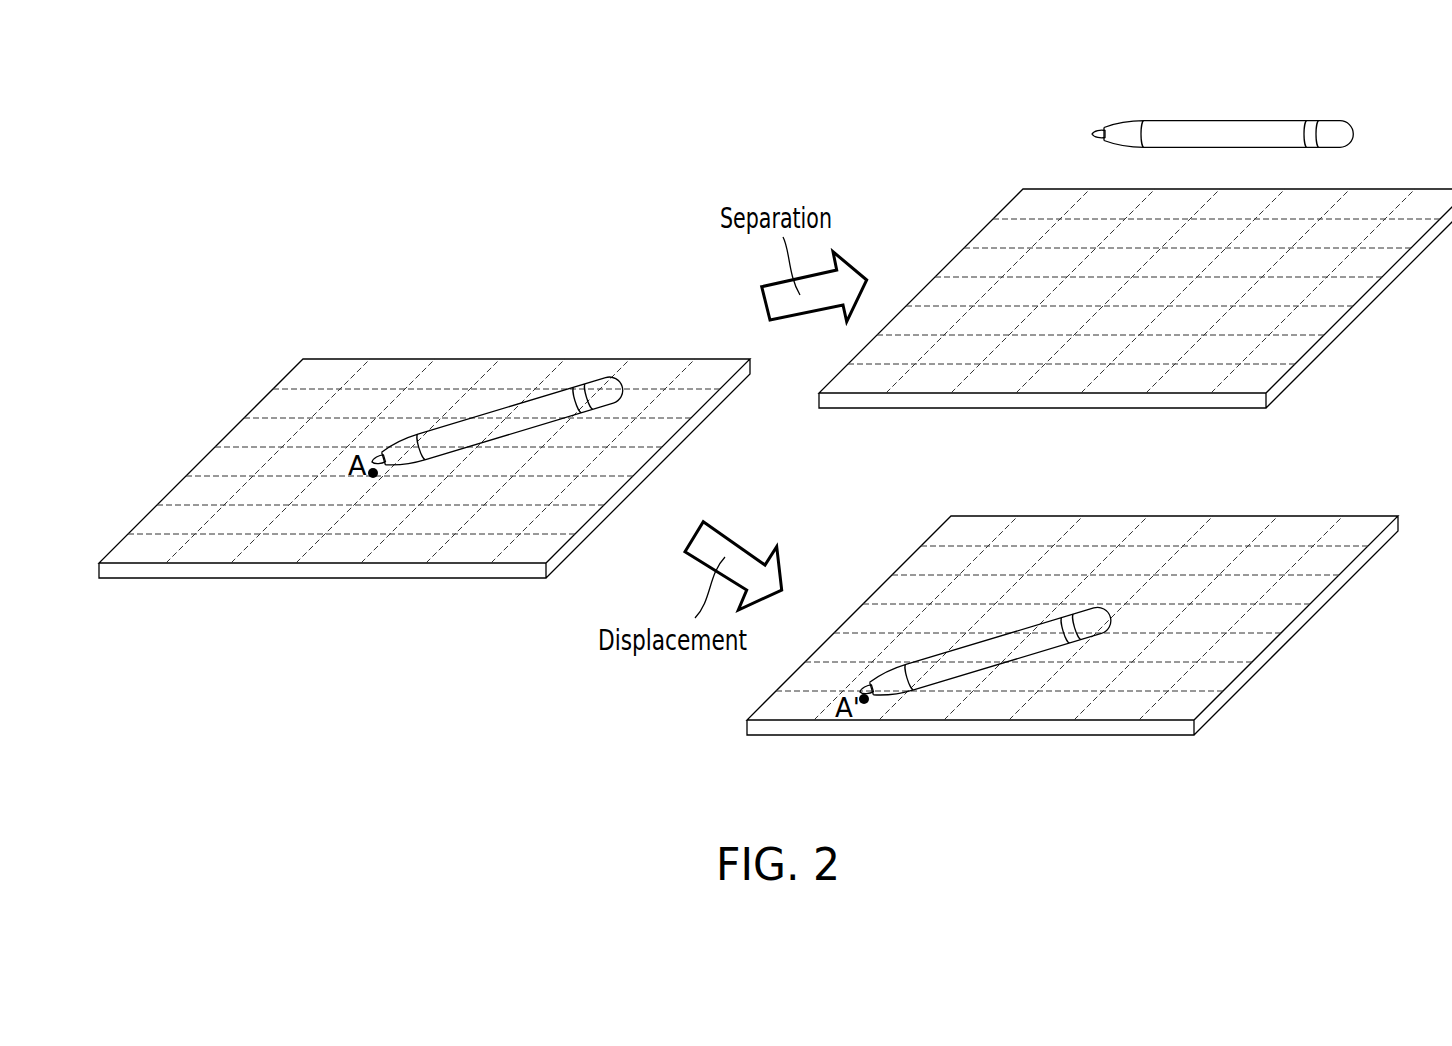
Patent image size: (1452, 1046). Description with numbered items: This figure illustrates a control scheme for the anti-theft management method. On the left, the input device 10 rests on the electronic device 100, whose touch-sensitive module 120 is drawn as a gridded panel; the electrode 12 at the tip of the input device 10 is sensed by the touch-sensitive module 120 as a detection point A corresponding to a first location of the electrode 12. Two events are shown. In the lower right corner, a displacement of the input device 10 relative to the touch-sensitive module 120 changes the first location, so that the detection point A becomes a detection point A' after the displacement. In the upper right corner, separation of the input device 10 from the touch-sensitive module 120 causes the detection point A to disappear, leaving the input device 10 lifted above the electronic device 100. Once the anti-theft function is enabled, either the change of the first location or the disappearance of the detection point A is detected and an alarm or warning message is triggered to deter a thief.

The input device 10 is at (1227, 136).
The electrode 12 is at (374, 430).
The electronic device 100 is at (193, 579).
The touch-sensitive module 120 is at (271, 387).